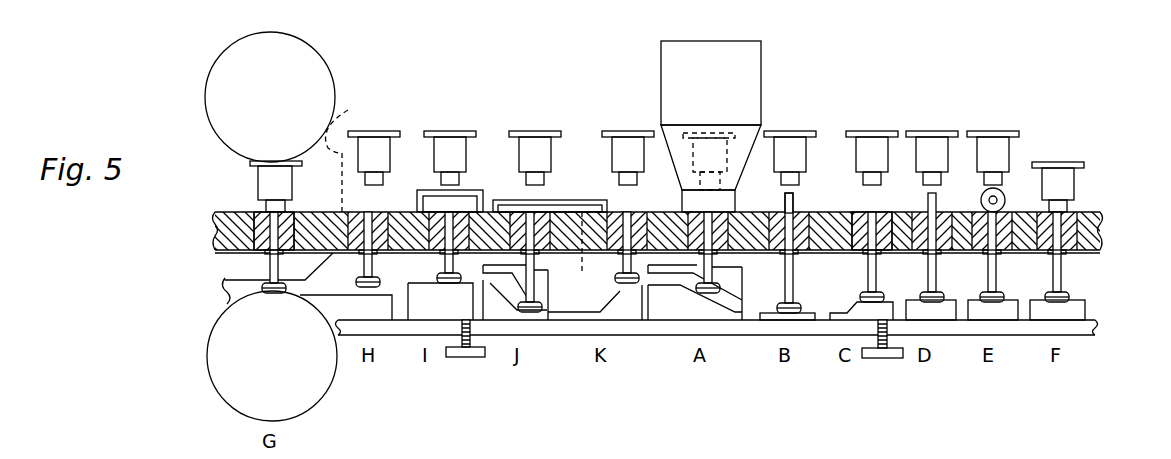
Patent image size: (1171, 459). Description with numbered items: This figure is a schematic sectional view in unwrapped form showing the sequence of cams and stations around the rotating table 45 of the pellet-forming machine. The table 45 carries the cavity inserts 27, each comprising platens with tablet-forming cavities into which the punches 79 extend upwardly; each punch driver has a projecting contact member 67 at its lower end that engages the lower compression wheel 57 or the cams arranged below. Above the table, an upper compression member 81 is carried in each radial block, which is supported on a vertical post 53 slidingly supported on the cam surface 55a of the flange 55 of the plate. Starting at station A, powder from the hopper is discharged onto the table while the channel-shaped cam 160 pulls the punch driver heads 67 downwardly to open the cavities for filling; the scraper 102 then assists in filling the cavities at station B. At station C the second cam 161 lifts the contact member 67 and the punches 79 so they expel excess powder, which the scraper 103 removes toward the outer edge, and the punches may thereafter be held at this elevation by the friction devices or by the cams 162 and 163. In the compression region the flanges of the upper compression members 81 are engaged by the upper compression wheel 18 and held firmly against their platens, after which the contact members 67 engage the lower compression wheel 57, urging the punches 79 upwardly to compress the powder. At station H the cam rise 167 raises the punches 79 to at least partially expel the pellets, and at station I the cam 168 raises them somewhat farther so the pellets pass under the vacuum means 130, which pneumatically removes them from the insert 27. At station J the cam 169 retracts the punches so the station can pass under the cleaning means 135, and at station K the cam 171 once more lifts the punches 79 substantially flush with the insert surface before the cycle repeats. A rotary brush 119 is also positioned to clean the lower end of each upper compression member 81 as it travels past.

The compression wheel 18 is at (315, 69).
The vertical post 53 is at (351, 154).
The cavity insert 27 is at (290, 212).
The table 45 is at (1102, 230).
The flange 55 is at (1097, 326).
The cam surface 55a is at (215, 282).
The lower compression wheel 57 is at (227, 335).
The punch 79 is at (268, 264).
The contact member 67 is at (380, 281).
The upper compression member 81 is at (1073, 182).
The scraper 102 is at (794, 206).
The scraper 103 is at (936, 207).
The rotary brush 119 is at (1006, 193).
The vacuum means 130 is at (476, 189).
The cleaning means 135 is at (572, 200).
The channel-shaped cam 160 is at (676, 314).
The second cam 161 is at (882, 300).
The cam 162 is at (947, 300).
The cam 163 is at (1049, 293).
The cam rise 167 is at (365, 295).
The cam 168 is at (463, 288).
The cam 169 is at (502, 316).
The cam 171 is at (618, 311).